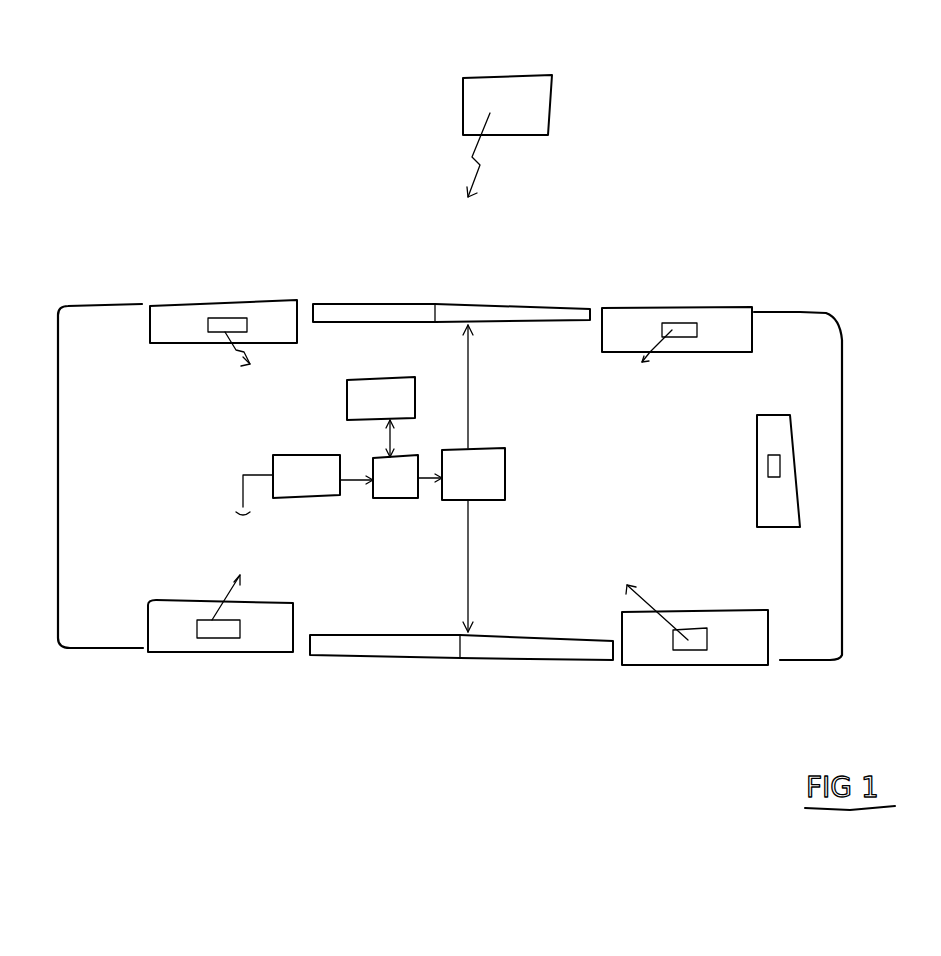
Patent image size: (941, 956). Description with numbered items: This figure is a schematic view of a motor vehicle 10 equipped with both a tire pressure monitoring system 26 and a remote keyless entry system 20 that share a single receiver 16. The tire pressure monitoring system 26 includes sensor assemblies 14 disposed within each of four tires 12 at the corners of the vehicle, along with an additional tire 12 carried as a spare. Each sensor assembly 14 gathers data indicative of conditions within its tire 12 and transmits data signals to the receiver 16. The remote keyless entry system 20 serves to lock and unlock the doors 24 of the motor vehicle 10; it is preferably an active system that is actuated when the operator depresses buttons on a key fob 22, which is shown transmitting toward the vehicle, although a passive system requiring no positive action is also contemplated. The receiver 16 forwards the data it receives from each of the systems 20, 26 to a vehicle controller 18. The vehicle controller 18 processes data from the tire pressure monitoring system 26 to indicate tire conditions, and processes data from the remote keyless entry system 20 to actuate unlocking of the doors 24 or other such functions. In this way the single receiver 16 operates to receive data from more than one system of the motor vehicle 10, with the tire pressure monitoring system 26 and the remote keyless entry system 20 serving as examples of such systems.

The motor vehicle 10 is at (830, 316).
The tire 12 is at (165, 322).
The sensor assembly 14 is at (243, 318).
The receiver 16 is at (304, 485).
The vehicle controller 18 is at (407, 477).
The remote keyless entry system 20 is at (473, 478).
The key fob 22 is at (507, 136).
The doors 24 is at (405, 315).
The tire pressure monitoring system 26 is at (381, 417).